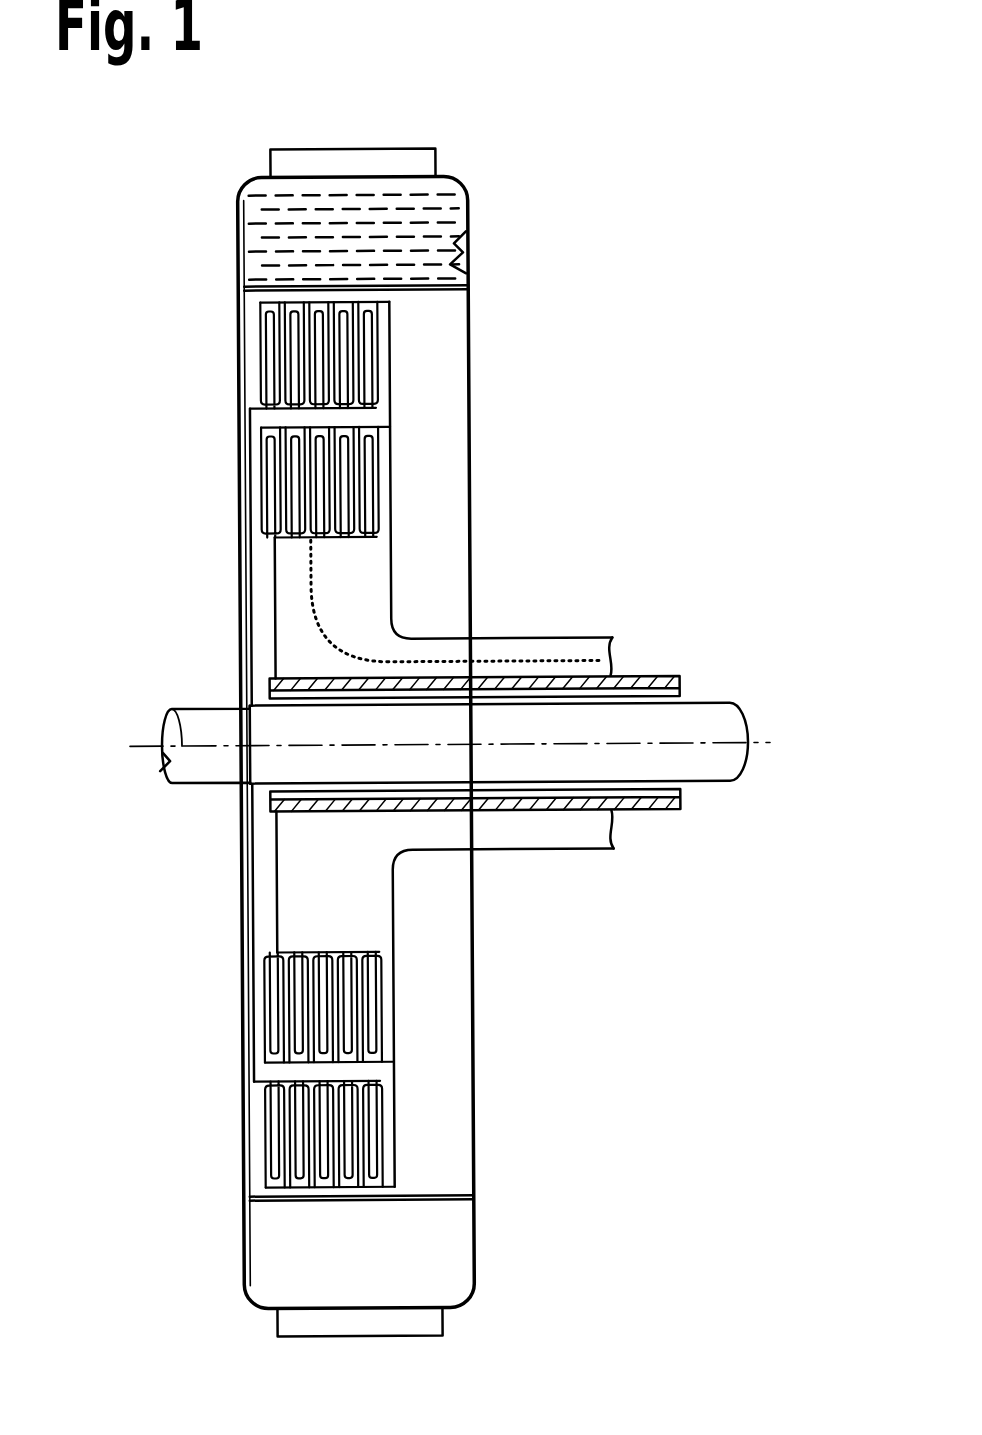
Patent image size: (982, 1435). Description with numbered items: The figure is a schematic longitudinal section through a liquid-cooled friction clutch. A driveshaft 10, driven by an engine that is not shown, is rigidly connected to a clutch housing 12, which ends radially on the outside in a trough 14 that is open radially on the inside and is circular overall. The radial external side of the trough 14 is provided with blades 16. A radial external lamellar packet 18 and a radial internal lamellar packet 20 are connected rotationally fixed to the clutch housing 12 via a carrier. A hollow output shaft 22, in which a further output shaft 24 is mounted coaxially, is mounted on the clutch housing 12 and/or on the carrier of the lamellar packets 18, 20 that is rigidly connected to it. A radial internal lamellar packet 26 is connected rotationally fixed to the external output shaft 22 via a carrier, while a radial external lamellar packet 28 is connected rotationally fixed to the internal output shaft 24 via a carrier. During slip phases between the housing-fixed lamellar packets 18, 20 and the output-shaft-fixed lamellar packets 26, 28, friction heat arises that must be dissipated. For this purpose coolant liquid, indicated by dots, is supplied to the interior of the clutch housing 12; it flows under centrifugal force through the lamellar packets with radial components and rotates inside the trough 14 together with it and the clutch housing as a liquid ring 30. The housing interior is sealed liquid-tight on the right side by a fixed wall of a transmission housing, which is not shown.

The driveshaft 10 is at (190, 762).
The clutch housing 12 is at (240, 927).
The trough 14 is at (456, 267).
The blades 16 is at (440, 1326).
The radial external lamellar packet 18 is at (383, 350).
The radial internal lamellar packet 20 is at (383, 468).
The hollow output shaft 22 is at (647, 677).
The output shaft 24 is at (711, 715).
The radial internal lamellar packet 26 is at (367, 950).
The radial external lamellar packet 28 is at (375, 1070).
The liquid ring 30 is at (423, 217).